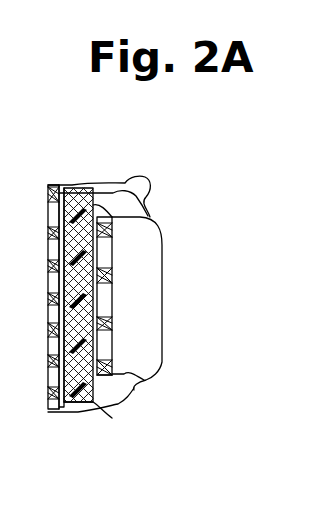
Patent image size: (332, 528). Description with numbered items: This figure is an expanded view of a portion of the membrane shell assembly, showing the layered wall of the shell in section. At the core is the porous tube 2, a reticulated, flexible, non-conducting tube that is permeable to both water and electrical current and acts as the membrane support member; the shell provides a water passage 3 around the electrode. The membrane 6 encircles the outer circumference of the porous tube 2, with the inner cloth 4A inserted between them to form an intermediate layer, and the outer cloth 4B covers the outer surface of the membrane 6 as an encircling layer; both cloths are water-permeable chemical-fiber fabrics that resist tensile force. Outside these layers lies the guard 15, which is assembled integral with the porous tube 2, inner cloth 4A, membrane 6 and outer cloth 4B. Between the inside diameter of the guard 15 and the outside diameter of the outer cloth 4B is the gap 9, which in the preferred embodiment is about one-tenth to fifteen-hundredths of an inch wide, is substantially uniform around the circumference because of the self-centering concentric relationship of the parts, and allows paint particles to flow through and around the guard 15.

The porous tube 2 is at (148, 178).
The water passage 3 is at (165, 252).
The cloth 4A is at (100, 210).
The outer cloth 4B is at (72, 197).
The membrane 6 is at (93, 404).
The gap 9 is at (65, 196).
The guard 15 is at (54, 411).